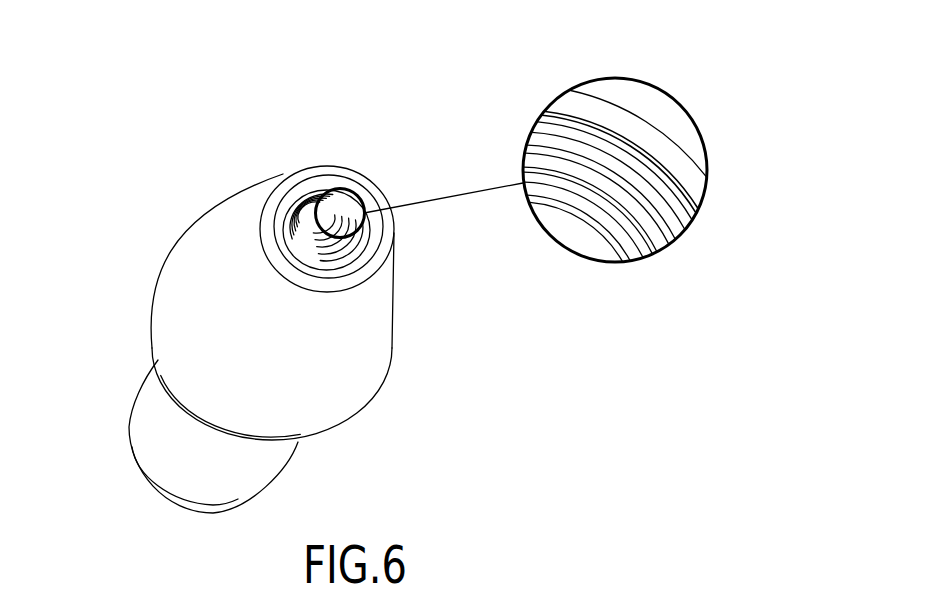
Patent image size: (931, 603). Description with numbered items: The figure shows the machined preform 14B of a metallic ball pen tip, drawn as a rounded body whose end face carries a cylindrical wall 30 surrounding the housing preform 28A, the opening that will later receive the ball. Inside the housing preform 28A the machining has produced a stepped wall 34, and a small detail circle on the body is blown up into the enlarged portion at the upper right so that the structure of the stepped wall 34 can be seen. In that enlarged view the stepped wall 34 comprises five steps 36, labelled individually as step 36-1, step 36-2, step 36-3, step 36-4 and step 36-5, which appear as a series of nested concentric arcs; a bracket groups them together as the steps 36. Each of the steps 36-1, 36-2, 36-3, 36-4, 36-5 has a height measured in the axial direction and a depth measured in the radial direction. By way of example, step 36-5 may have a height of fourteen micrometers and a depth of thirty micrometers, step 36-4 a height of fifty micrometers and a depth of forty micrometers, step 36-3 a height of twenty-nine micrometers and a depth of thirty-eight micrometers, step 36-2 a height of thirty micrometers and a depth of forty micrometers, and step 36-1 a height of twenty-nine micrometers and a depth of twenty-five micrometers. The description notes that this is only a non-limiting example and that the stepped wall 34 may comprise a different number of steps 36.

The machined preform 14B is at (188, 298).
The cylindrical wall 30 is at (298, 190).
The housing preform 28A is at (323, 183).
The stepped wall 34 is at (670, 248).
The steps 36 is at (668, 143).
The step 36-1 is at (565, 203).
The step 36-2 is at (602, 203).
The step 36-3 is at (627, 202).
The step 36-4 is at (650, 197).
The step 36-5 is at (677, 193).